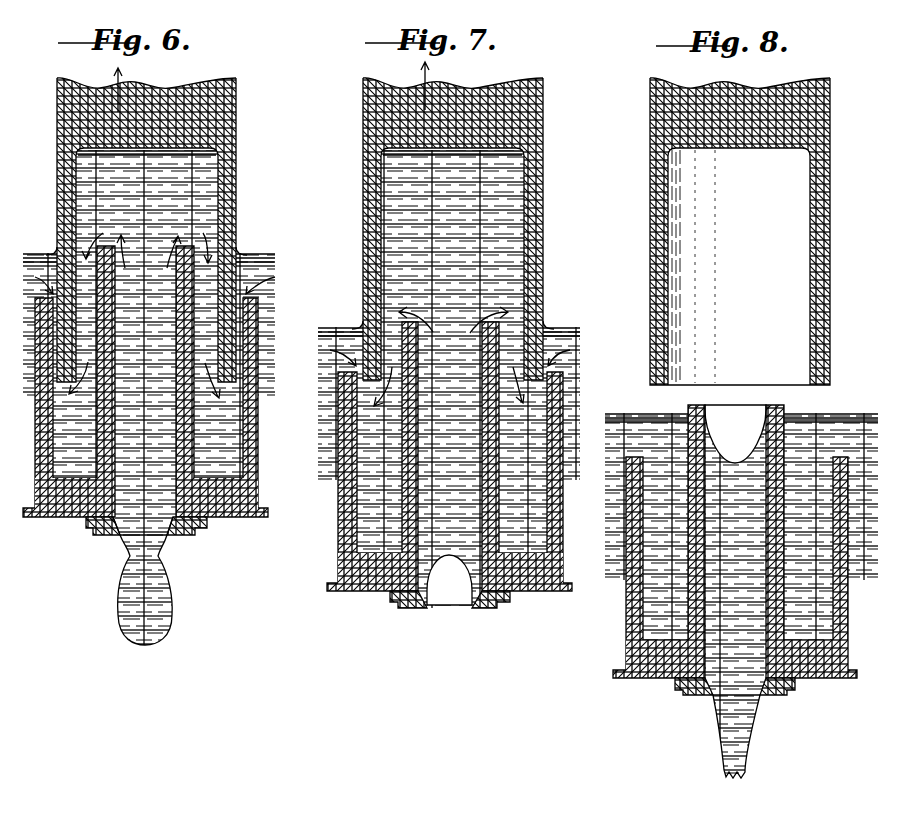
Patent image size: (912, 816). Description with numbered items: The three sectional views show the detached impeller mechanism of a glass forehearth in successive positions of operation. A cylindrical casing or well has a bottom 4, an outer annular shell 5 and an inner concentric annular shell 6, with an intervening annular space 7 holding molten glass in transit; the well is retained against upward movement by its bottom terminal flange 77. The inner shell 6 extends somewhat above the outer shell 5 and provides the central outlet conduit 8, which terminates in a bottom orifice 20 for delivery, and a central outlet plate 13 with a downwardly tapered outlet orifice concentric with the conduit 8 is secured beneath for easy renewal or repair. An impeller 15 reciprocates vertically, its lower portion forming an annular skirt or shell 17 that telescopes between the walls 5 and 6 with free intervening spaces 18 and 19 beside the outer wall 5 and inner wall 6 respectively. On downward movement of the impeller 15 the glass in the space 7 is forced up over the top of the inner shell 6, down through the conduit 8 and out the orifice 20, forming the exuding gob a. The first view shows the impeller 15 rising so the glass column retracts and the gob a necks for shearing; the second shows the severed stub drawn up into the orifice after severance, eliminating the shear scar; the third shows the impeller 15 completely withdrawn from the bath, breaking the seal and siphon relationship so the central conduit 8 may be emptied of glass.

In FIG. 6, the impeller 15 is at (66, 114).
In FIG. 7, the impeller 15 is at (367, 108).
In FIG. 8, the impeller 15 is at (660, 118).
In FIG. 6, the annular skirt or shell 17 is at (58, 202).
In FIG. 7, the annular skirt or shell 17 is at (370, 212).
In FIG. 8, the annular skirt or shell 17 is at (656, 210).
In FIG. 6, the central outlet conduit 8 is at (145, 432).
In FIG. 7, the central outlet conduit 8 is at (450, 508).
In FIG. 8, the central outlet conduit 8 is at (735, 612).
In FIG. 6, the inner concentric annular shell 6 is at (180, 423).
In FIG. 7, the inner concentric annular shell 6 is at (490, 357).
In FIG. 8, the inner concentric annular shell 6 is at (783, 422).
In FIG. 6, the outer annular shell 5 is at (43, 433).
In FIG. 7, the outer annular shell 5 is at (557, 408).
In FIG. 8, the outer annular shell 5 is at (851, 492).
In FIG. 6, the intervening annular space 7 is at (218, 457).
In FIG. 7, the intervening annular space 7 is at (525, 498).
In FIG. 8, the intervening annular space 7 is at (808, 587).
In FIG. 6, the bottom 4 is at (220, 507).
In FIG. 7, the bottom 4 is at (522, 578).
In FIG. 8, the bottom 4 is at (810, 666).
In FIG. 6, the bottom terminal flange 77 is at (259, 518).
In FIG. 7, the bottom terminal flange 77 is at (565, 590).
In FIG. 8, the bottom terminal flange 77 is at (850, 677).
In FIG. 6, the central outlet plate 13 is at (103, 538).
In FIG. 7, the central outlet plate 13 is at (484, 607).
In FIG. 8, the central outlet plate 13 is at (777, 697).
In FIG. 6, the bottom orifice 20 is at (128, 537).
In FIG. 7, the bottom orifice 20 is at (448, 608).
In FIG. 8, the bottom orifice 20 is at (713, 697).
In FIG. 6, the free intervening space 18 is at (53, 384).
In FIG. 7, the free intervening space 18 is at (562, 380).
In FIG. 6, the free intervening space 19 is at (204, 383).
In FIG. 7, the free intervening space 19 is at (388, 355).
In FIG. 6, the exuding gob a is at (128, 620).